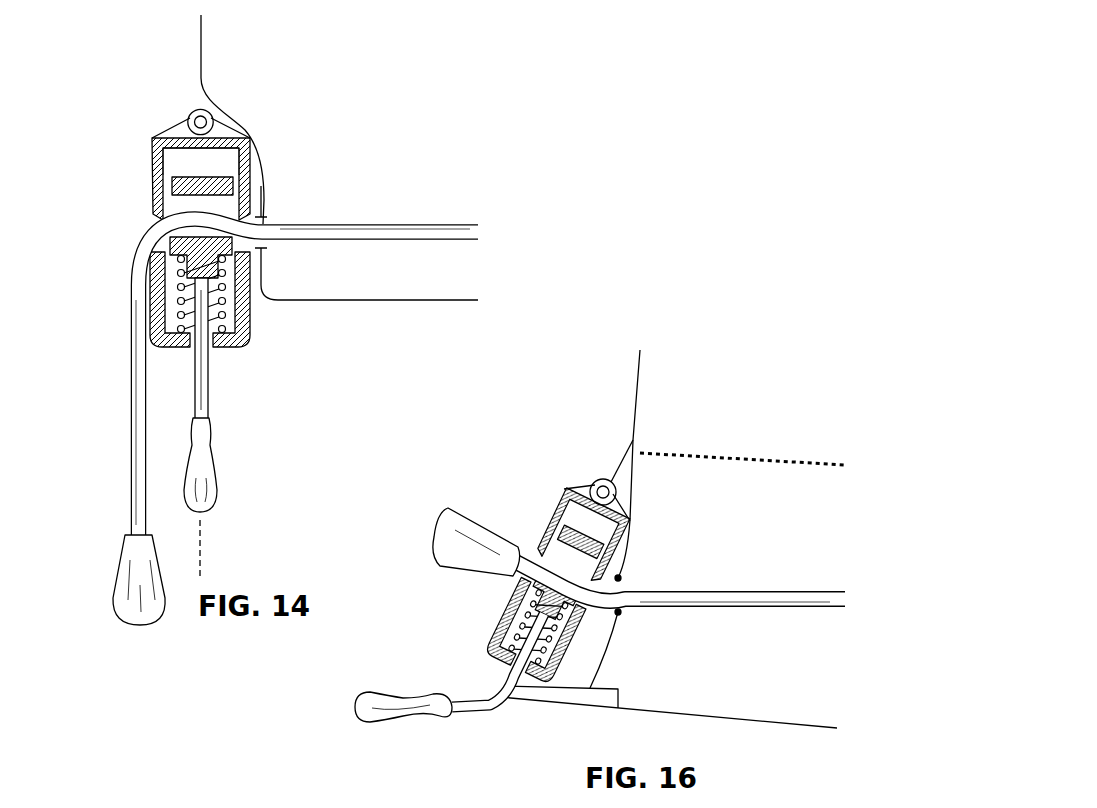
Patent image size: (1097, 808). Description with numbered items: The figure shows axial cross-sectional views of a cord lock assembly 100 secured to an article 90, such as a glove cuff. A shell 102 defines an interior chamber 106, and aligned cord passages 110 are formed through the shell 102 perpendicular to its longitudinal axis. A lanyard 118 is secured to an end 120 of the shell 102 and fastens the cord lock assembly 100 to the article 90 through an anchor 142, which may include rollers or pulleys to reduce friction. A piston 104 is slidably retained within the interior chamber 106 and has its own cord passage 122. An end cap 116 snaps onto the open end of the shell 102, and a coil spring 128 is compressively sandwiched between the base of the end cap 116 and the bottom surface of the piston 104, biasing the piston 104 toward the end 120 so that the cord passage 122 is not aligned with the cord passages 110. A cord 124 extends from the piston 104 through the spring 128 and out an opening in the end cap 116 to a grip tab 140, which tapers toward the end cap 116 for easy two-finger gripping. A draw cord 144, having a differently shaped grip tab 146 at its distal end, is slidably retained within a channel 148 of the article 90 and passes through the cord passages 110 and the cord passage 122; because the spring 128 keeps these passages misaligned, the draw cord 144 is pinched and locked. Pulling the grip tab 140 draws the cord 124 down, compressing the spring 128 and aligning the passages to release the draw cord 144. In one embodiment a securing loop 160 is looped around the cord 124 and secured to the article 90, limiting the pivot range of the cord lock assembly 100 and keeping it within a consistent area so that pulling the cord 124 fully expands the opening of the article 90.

In FIG. 14, the article 90 is at (200, 36).
In FIG. 16, the article 90 is at (732, 692).
In FIG. 14, the cord lock assembly 100 is at (115, 127).
In FIG. 16, the cord lock assembly 100 is at (500, 590).
In FIG. 14, the shell 102 is at (152, 160).
In FIG. 16, the shell 102 is at (550, 520).
In FIG. 14, the piston 104 is at (172, 186).
In FIG. 16, the piston 104 is at (632, 525).
In FIG. 14, the interior chamber 106 is at (222, 171).
In FIG. 14, the cord passages 110 is at (150, 229).
In FIG. 14, the end cap 116 is at (254, 325).
In FIG. 16, the end cap 116 is at (535, 630).
In FIG. 14, the lanyard 118 is at (205, 95).
In FIG. 16, the lanyard 118 is at (628, 449).
In FIG. 14, the end of the shell 120 is at (242, 132).
In FIG. 16, the end of the shell 120 is at (584, 487).
In FIG. 14, the cord passage 122 is at (262, 204).
In FIG. 14, the cord 124 is at (210, 390).
In FIG. 16, the cord 124 is at (473, 712).
In FIG. 14, the coil spring 128 is at (178, 321).
In FIG. 16, the coil spring 128 is at (505, 623).
In FIG. 14, the grip tab 140 is at (215, 455).
In FIG. 16, the grip tab 140 is at (360, 697).
In FIG. 14, the anchor 142 is at (188, 117).
In FIG. 16, the anchor 142 is at (600, 478).
In FIG. 14, the draw cord 144 is at (131, 400).
In FIG. 16, the draw cord 144 is at (706, 595).
In FIG. 14, the grip tab 146 is at (118, 584).
In FIG. 16, the grip tab 146 is at (463, 522).
In FIG. 14, the channel 148 is at (405, 225).
In FIG. 16, the securing loop 160 is at (563, 700).